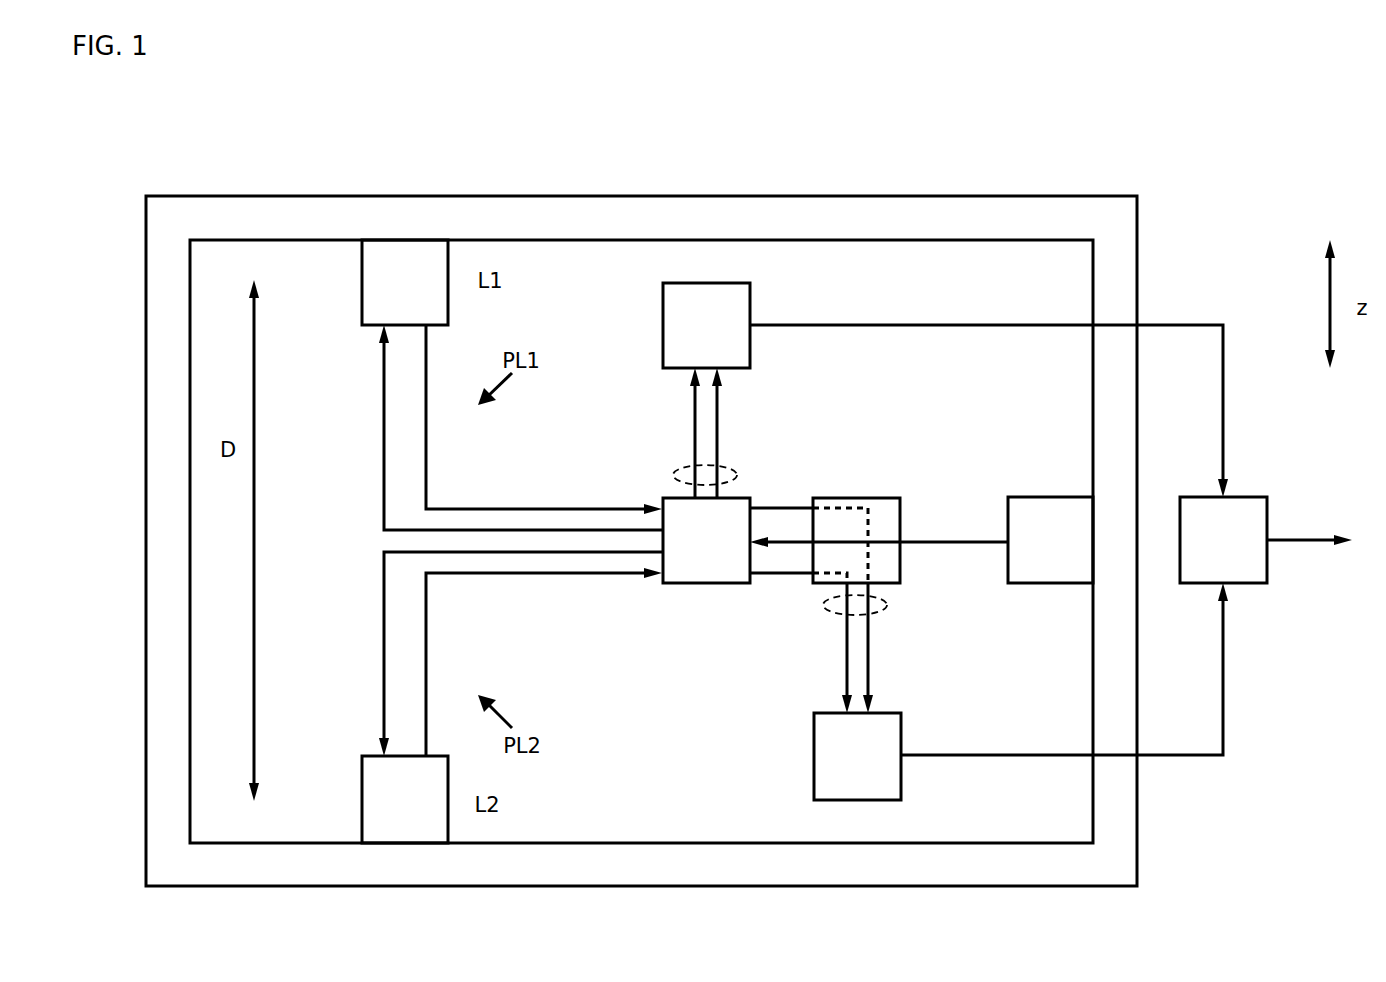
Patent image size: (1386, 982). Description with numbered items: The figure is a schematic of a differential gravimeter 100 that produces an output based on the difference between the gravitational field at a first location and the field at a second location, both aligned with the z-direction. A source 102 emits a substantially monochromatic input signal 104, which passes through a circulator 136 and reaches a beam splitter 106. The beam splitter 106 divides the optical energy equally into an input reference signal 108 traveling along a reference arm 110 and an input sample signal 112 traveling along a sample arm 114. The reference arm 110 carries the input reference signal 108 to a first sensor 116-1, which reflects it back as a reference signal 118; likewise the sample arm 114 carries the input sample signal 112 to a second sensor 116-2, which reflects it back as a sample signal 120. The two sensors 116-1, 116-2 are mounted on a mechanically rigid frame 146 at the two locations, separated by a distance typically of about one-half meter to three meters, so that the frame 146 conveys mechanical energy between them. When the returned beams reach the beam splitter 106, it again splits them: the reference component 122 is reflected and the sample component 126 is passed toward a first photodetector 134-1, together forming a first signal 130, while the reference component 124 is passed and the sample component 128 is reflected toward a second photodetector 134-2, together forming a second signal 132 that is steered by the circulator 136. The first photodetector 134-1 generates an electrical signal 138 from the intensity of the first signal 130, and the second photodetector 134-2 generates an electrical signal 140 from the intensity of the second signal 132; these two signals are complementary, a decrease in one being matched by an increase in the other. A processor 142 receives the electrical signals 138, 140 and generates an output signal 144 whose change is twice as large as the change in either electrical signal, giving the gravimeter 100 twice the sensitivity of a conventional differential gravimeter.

The gravimeter 100 is at (308, 110).
The source 102 is at (1050, 540).
The input signal 104 is at (942, 540).
The beam splitter 106 is at (706, 540).
The input reference signal 108 is at (384, 368).
The reference arm 110 is at (551, 380).
The input sample signal 112 is at (384, 713).
The sample arm 114 is at (551, 718).
The sensor 116-1 is at (405, 282).
The sensor 116-2 is at (405, 799).
The reference signal 118 is at (490, 509).
The sample signal 120 is at (490, 573).
The reference component 122 is at (693, 422).
The reference component 124 is at (845, 660).
The sample component 126 is at (719, 422).
The sample component 128 is at (870, 660).
The first signal 130 is at (738, 475).
The second signal 132 is at (888, 605).
The photodetector 134-1 is at (706, 325).
The photodetector 134-2 is at (857, 756).
The circulator 136 is at (875, 497).
The electrical signal 138 is at (1180, 325).
The electrical signal 140 is at (1180, 755).
The processor 142 is at (1223, 540).
The output signal 144 is at (1298, 540).
The frame 146 is at (920, 863).